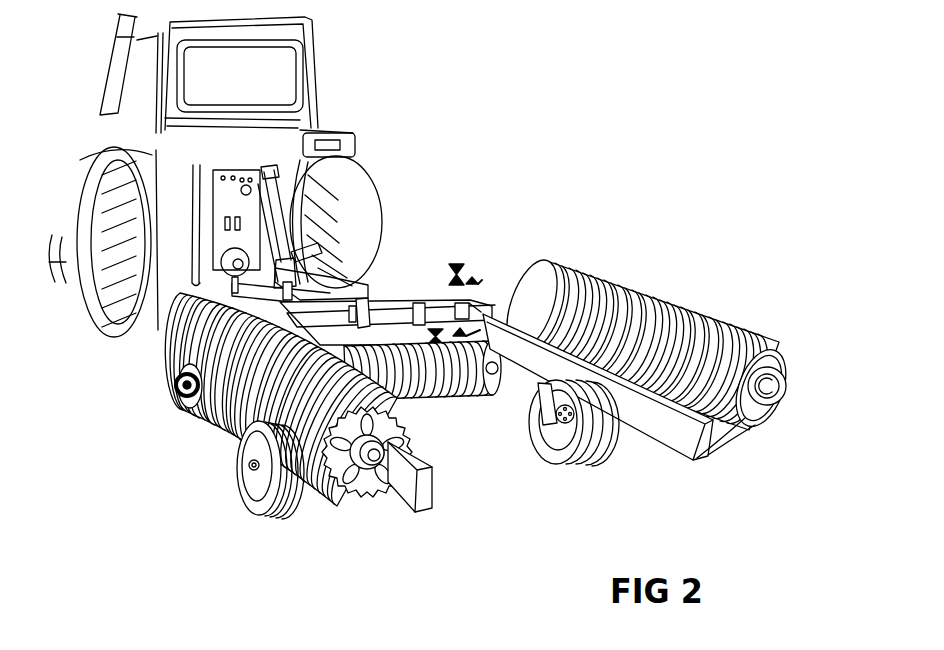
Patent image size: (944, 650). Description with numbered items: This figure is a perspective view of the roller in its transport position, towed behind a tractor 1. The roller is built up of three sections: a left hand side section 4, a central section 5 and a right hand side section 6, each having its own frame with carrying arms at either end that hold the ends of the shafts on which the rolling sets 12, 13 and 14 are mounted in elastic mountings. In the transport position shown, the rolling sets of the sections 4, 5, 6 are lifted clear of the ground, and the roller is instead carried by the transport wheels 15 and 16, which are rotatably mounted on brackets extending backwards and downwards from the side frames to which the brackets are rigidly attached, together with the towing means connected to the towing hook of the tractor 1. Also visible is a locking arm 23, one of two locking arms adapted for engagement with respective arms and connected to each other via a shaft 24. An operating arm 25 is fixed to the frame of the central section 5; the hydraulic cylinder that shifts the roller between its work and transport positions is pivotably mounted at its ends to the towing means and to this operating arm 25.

The tractor 1 is at (330, 70).
The left hand side section 4 is at (292, 442).
The central section 5 is at (432, 406).
The right hand side section 6 is at (639, 382).
The rolling set 12 is at (250, 398).
The rolling set 13 is at (470, 388).
The rolling set 14 is at (608, 303).
The transport wheel 15 is at (250, 506).
The transport wheel 16 is at (572, 440).
The locking arm 23 is at (470, 307).
The shaft 24 is at (420, 307).
The operating arm 25 is at (357, 304).